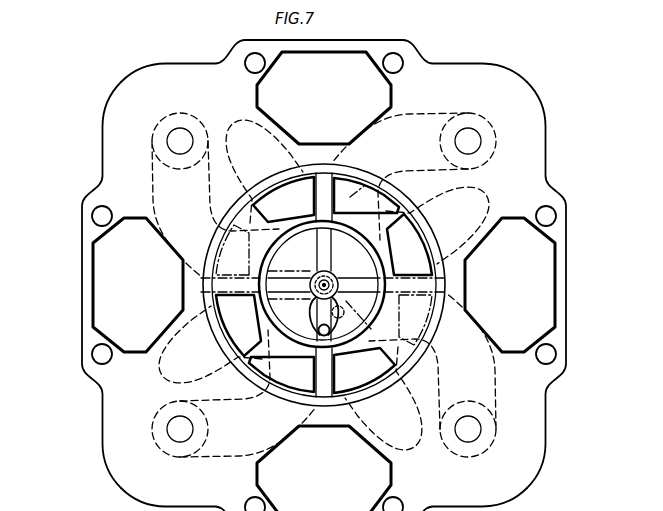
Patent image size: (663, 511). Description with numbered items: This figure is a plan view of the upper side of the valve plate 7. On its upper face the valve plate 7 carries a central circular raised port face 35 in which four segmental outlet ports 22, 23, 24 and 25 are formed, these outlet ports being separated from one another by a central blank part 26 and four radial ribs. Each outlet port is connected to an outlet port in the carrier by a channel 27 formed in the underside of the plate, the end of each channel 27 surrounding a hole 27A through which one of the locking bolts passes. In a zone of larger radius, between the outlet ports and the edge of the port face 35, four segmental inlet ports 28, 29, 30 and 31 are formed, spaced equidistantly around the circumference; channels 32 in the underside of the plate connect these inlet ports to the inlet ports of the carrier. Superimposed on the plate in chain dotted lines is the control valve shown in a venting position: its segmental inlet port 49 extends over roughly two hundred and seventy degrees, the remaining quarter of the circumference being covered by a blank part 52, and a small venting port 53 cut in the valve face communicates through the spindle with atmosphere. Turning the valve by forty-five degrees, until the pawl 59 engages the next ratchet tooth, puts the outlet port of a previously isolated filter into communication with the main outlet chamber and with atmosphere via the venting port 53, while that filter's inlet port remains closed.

The valve plate 7 is at (118, 124).
The segmental outlet port 22 is at (307, 340).
The segmental outlet port 23 is at (322, 284).
The segmental outlet port 24 is at (323, 284).
The segmental outlet port 25 is at (372, 303).
The central blank part 26 is at (309, 291).
The channel 27 is at (150, 174).
The hole 27A is at (184, 138).
The segmental inlet port 28 is at (246, 343).
The segmental inlet port 29 is at (282, 200).
The segmental inlet port 30 is at (446, 270).
The segmental inlet port 31 is at (358, 384).
The channel 32 is at (272, 132).
The central circular raised port face 35 is at (267, 390).
The segmental inlet port 49 is at (238, 225).
The blank part 52 is at (368, 331).
The venting port 53 is at (326, 315).
The pawl 59 is at (450, 306).